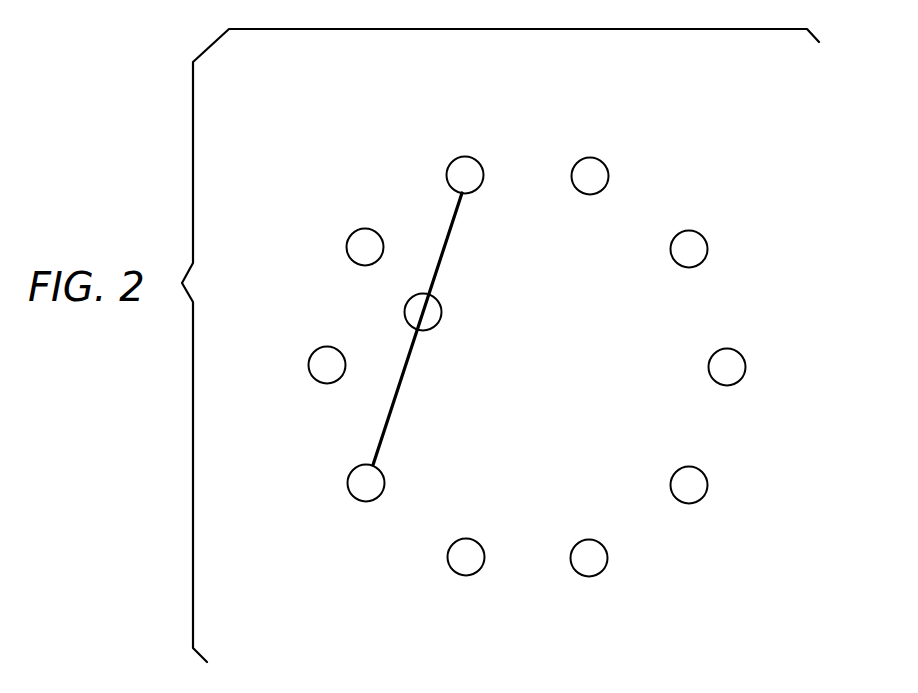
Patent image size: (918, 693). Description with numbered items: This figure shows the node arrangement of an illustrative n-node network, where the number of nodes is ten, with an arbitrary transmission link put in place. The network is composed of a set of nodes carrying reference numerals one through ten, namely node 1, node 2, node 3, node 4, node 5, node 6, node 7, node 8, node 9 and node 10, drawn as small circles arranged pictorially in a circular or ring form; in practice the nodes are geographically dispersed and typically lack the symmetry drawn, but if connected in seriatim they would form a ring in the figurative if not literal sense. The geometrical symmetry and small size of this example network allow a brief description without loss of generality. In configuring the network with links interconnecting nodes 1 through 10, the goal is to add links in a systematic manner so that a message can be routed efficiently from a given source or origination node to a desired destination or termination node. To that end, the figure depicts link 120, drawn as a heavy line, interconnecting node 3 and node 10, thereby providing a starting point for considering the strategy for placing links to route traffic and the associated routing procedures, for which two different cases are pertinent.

The node 1 is at (309, 370).
The node 2 is at (348, 238).
The node 3 is at (457, 156).
The node 4 is at (588, 157).
The node 5 is at (707, 238).
The node 6 is at (745, 364).
The node 7 is at (703, 499).
The node 8 is at (595, 576).
The node 9 is at (465, 576).
The node 10 is at (348, 497).
The link 120 is at (441, 313).